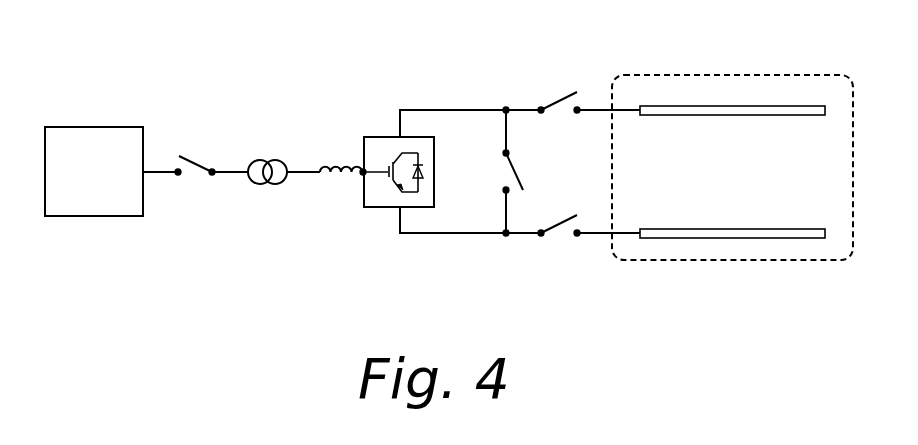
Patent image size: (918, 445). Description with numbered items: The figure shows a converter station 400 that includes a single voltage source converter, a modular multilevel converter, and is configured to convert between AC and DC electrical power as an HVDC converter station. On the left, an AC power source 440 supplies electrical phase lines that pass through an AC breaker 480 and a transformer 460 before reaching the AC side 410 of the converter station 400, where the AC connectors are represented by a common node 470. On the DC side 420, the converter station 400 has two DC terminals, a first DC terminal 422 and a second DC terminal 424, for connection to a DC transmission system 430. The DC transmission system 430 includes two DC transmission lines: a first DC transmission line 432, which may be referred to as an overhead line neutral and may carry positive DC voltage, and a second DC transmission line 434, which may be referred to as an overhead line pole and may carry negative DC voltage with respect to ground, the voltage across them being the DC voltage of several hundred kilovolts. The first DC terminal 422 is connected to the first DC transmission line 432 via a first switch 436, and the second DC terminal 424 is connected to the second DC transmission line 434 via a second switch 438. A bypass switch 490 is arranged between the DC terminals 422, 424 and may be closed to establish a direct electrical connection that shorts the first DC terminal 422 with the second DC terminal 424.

The converter station 400 is at (382, 119).
The AC side 410 is at (327, 215).
The DC side 420 is at (488, 183).
The first DC terminal 422 is at (505, 108).
The second DC terminal 424 is at (505, 236).
The DC transmission system 430 is at (725, 262).
The first DC transmission line 432 is at (723, 116).
The second DC transmission line 434 is at (723, 229).
The first switch 436 is at (562, 95).
The second switch 438 is at (559, 228).
The AC power source 440 is at (93, 127).
The transformer 460 is at (270, 160).
The common node 470 is at (361, 169).
The AC breaker 480 is at (204, 176).
The bypass switch 490 is at (514, 173).